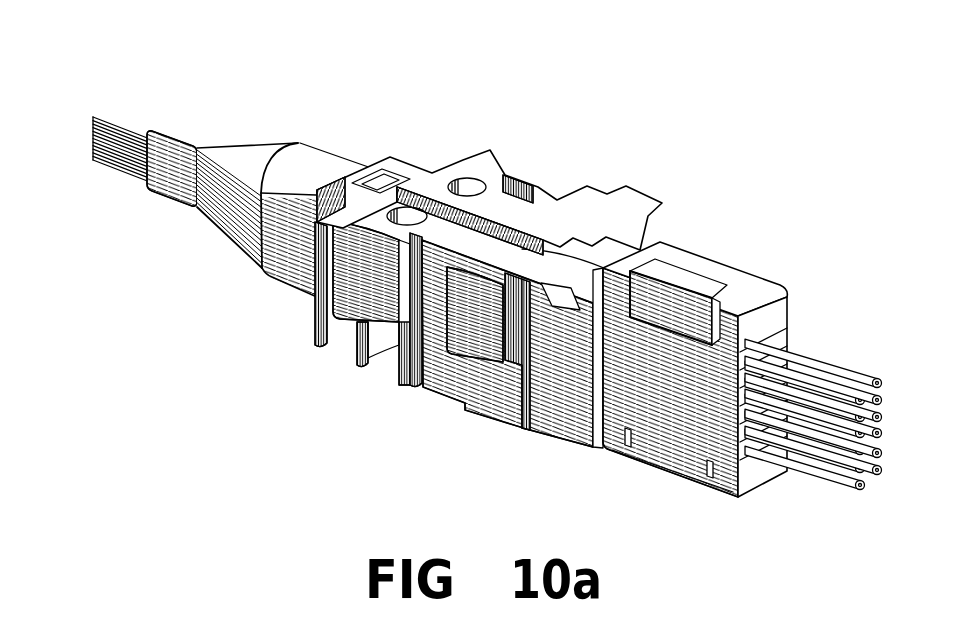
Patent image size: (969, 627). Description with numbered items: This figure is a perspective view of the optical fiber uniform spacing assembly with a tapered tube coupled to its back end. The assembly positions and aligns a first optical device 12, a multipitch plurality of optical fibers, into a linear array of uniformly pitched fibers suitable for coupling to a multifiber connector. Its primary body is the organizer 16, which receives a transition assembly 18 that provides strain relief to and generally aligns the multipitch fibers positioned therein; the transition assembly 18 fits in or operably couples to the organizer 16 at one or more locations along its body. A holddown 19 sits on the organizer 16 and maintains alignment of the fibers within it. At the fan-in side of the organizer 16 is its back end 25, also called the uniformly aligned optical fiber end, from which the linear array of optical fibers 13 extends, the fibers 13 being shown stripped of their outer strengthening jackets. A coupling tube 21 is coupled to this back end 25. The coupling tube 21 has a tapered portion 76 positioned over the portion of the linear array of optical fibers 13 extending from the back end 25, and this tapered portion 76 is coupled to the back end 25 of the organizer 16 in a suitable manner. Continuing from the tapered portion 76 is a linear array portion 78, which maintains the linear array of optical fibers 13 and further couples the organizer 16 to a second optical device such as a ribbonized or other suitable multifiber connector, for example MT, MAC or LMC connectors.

The first optical device 12 is at (813, 377).
The optical fibers 13 is at (103, 137).
The organizer 16 is at (473, 406).
The transition assembly 18 is at (660, 472).
The holddown 19 is at (397, 178).
The coupling tube 21 is at (247, 251).
The back end 25 is at (315, 321).
The tapered portion 76 is at (250, 148).
The linear array portion 78 is at (175, 142).